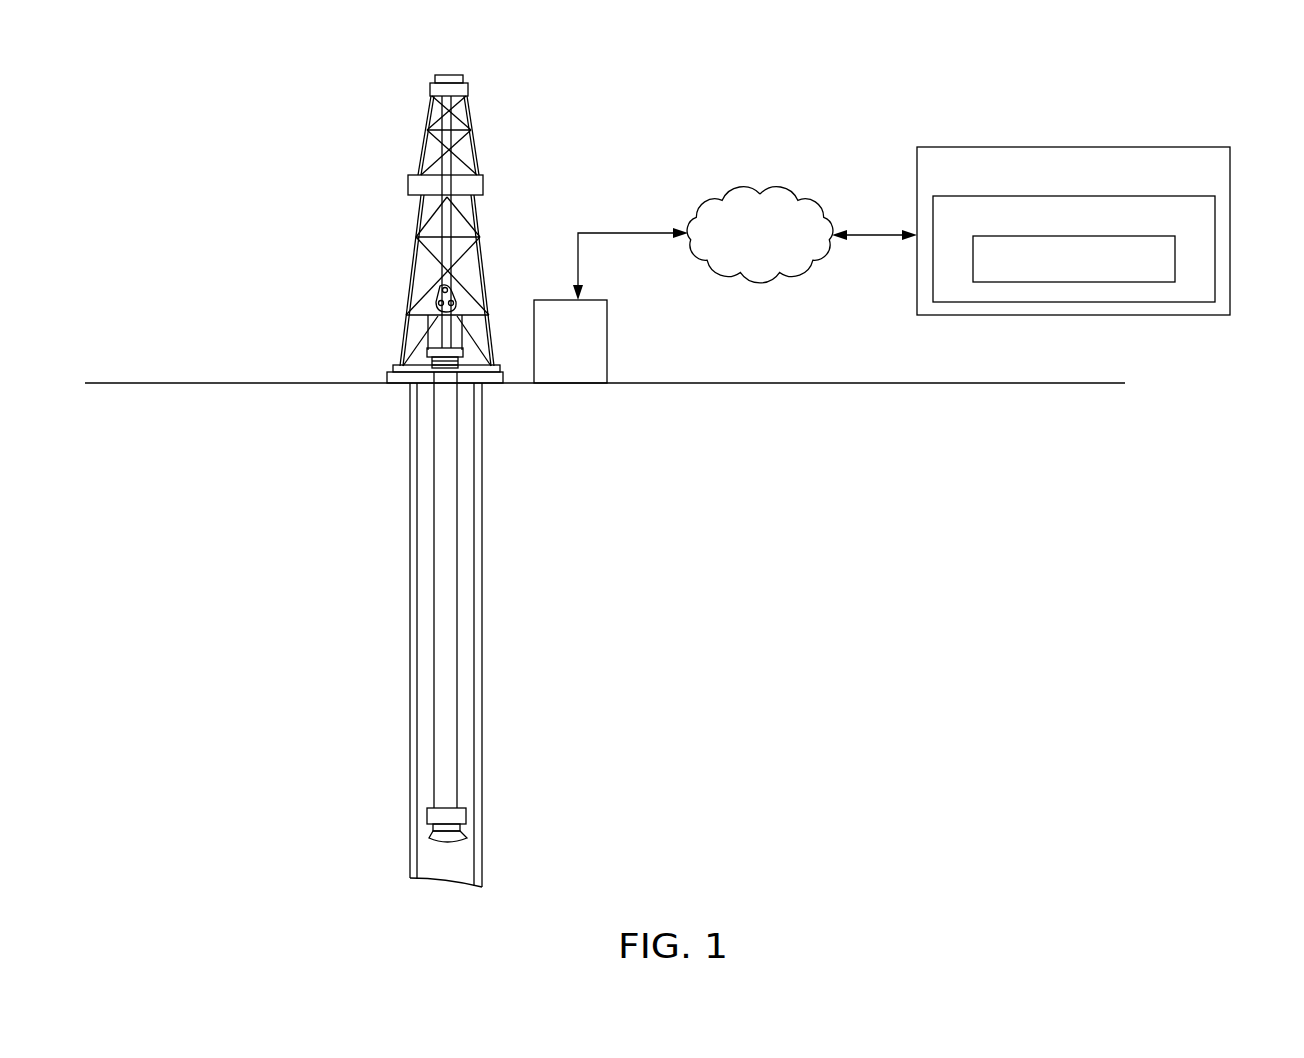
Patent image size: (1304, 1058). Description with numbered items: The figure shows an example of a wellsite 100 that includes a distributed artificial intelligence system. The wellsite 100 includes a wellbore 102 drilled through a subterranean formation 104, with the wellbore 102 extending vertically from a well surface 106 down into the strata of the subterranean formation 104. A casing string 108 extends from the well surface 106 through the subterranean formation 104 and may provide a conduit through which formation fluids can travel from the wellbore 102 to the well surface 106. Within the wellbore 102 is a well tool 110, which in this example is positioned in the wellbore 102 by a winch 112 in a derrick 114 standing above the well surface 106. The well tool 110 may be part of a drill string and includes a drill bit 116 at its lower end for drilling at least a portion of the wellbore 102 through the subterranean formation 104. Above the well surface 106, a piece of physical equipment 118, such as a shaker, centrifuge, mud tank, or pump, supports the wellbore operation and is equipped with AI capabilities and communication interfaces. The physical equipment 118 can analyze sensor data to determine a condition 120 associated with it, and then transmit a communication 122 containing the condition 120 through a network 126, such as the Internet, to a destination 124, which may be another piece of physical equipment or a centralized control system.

The wellsite 100 is at (195, 113).
The wellbore 102 is at (408, 445).
The subterranean formation 104 is at (268, 610).
The well surface 106 is at (747, 384).
The casing string 108 is at (415, 565).
The well tool 110 is at (450, 450).
The winch 112 is at (437, 297).
The derrick 114 is at (480, 218).
The drill bit 116 is at (432, 838).
The physical equipment 118 is at (588, 356).
The condition 120 is at (1175, 256).
The communication 122 is at (1215, 233).
The destination 124 is at (1065, 147).
The network 126 is at (768, 190).